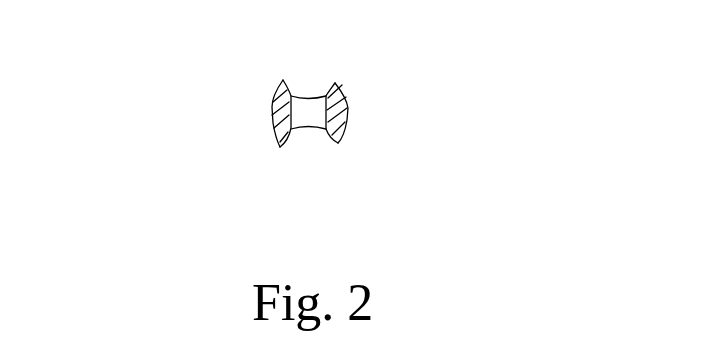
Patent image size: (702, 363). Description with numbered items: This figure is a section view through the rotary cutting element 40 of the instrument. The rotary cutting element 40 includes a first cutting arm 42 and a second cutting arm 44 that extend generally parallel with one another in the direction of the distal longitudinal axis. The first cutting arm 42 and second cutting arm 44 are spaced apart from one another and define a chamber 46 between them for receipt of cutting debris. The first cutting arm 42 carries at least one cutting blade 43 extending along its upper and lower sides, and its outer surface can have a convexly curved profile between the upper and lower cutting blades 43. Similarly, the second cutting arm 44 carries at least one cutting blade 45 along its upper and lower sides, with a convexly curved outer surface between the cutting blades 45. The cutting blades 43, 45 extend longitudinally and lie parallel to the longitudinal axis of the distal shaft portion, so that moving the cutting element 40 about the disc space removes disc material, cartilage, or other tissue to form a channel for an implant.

The rotary cutting element 40 is at (242, 87).
The first cutting arm 42 is at (273, 128).
The cutting blade 43 is at (284, 82).
The second cutting arm 44 is at (348, 108).
The cutting blade 45 is at (333, 82).
The chamber 46 is at (308, 132).